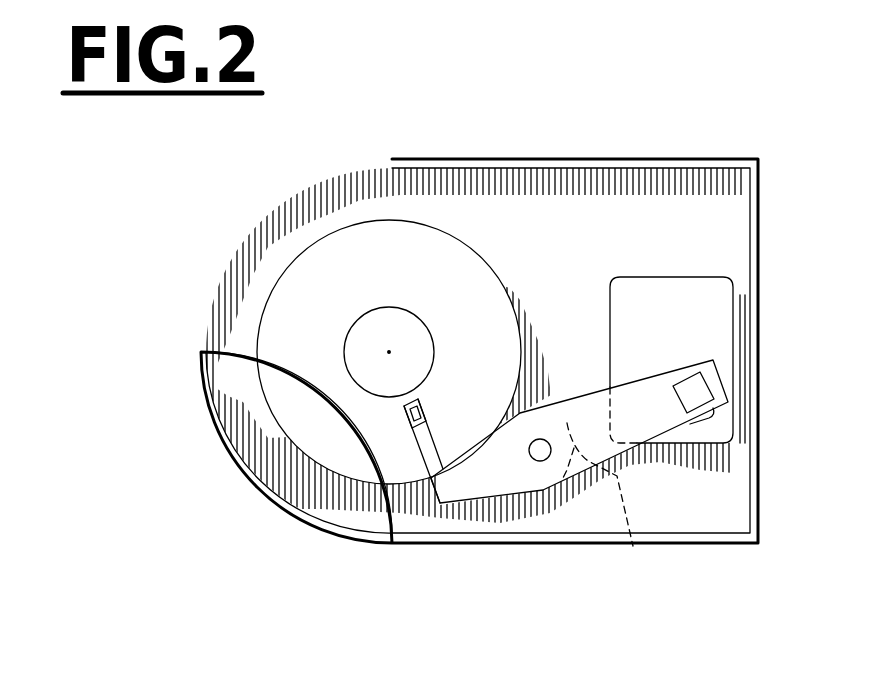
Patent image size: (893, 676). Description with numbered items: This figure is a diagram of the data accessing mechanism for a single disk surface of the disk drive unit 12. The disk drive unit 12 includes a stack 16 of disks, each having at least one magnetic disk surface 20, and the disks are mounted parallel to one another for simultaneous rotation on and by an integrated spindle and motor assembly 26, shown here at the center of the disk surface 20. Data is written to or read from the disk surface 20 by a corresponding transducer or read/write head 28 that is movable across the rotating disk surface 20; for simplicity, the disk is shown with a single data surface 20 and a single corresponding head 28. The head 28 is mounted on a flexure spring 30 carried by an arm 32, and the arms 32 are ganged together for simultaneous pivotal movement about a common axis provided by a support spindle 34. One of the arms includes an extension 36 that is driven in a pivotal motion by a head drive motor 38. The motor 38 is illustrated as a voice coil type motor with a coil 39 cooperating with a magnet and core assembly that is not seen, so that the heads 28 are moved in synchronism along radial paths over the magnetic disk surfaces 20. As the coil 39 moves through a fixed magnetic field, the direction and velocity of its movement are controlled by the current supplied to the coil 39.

The disk drive unit 12 is at (541, 152).
The stack 16 is at (273, 427).
The magnetic disk surface 20 is at (320, 258).
The integrated spindle and motor assembly 26 is at (403, 328).
The read/write head 28 is at (405, 412).
The flexure spring 30 is at (421, 437).
The arm 32 is at (453, 487).
The support spindle 34 is at (547, 437).
The extension 36 is at (678, 428).
The head drive motor 38 is at (690, 293).
The coil 39 is at (698, 390).